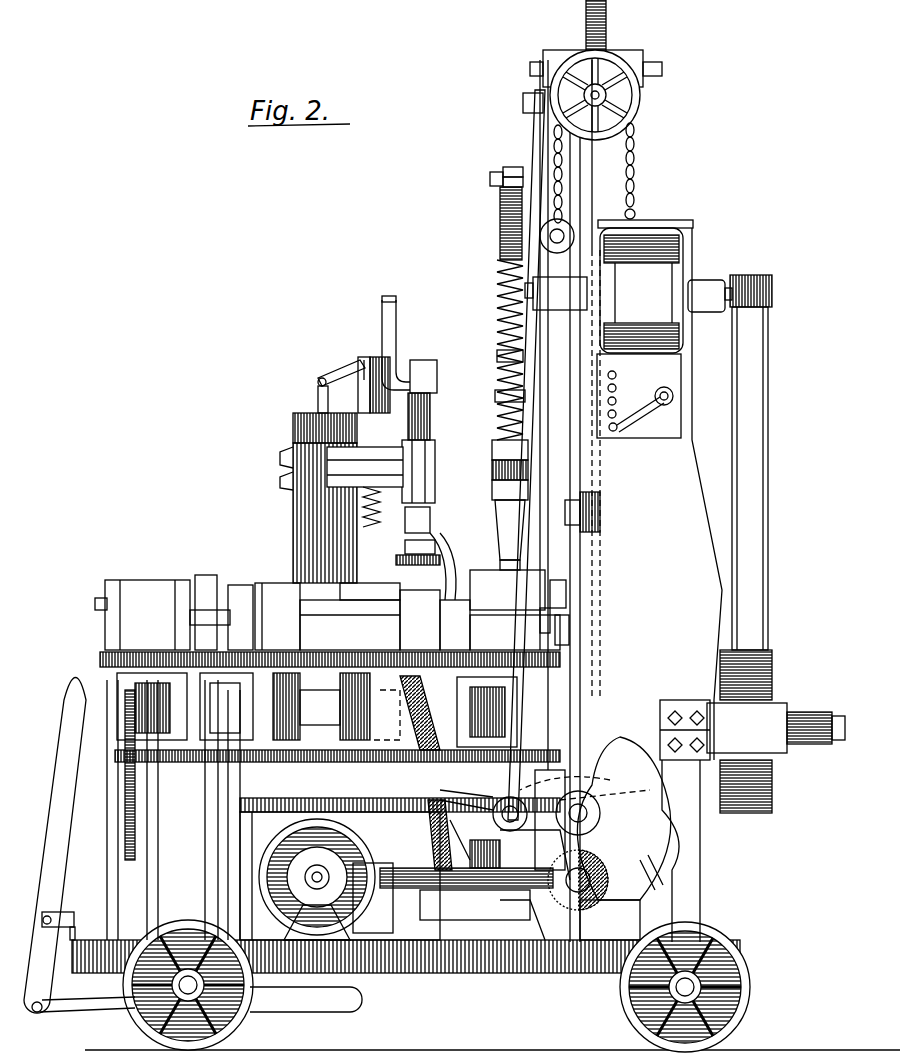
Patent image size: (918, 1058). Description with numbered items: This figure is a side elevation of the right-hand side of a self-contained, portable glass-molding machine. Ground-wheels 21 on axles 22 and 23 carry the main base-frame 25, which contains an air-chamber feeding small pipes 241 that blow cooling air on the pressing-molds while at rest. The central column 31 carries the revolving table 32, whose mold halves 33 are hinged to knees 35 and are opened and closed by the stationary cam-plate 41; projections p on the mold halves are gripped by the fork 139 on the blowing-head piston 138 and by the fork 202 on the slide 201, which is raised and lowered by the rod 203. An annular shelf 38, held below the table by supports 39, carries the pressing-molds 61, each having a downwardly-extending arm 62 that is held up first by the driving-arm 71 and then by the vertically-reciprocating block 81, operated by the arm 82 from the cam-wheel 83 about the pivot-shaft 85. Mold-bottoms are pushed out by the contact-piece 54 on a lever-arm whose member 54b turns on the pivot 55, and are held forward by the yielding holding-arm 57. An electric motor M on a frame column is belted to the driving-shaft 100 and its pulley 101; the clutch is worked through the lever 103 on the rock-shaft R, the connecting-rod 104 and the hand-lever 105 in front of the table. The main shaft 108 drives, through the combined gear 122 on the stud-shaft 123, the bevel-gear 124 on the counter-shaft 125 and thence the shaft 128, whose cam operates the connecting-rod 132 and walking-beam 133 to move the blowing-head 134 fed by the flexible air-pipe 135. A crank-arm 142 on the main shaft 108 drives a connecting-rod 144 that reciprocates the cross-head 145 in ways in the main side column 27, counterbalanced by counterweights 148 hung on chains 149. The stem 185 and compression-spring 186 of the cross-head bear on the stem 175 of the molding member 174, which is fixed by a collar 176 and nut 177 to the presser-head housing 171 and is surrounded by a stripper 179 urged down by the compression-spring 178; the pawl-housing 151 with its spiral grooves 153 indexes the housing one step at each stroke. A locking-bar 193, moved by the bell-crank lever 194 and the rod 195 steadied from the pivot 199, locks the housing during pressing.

The ground-wheels 21 is at (130, 1012).
The axle 22 is at (635, 1005).
The axle 23 is at (200, 990).
The main base-frame 25 is at (478, 976).
The main side column 27 is at (680, 493).
The central main standard or column 31 is at (217, 875).
The revolving table 32 is at (100, 658).
The mold half 33 is at (108, 582).
The knee 35 is at (186, 578).
The annular shelf 38 is at (190, 763).
The distance-blocks or supports 39 is at (103, 766).
The stationary cam-plate 41 is at (282, 580).
The contact-piece 54 is at (405, 687).
The lever-arm member 54b is at (466, 883).
The pivot 55 is at (507, 850).
The yielding holding-arm 57 is at (416, 700).
The pressing-mold 61 is at (118, 695).
The downwardly-extending arm 62 is at (125, 832).
The driving-arm 71 is at (444, 827).
The vertically-reciprocating block 81 is at (296, 506).
The arm 82 is at (508, 818).
The cam-wheel 83 is at (292, 900).
The pivot-shaft 85 is at (470, 792).
The driving-shaft 100 is at (828, 715).
The pulley 101 is at (762, 806).
The lever 103 is at (672, 872).
The connecting-rod 104 is at (356, 1012).
The hand-lever 105 is at (66, 698).
The main shaft 108 is at (598, 805).
The combined spur and bevel gear 122 is at (587, 905).
The stud-shaft 123 is at (592, 880).
The bevel-gear 124 is at (548, 905).
The counter-shaft 125 is at (490, 888).
The shaft 128 is at (322, 907).
The connecting-rod 132 is at (300, 397).
The walking-beam 133 is at (340, 372).
The blowing-head 134 is at (400, 550).
The flexible air-pipe 135 is at (398, 312).
The piston 138 is at (430, 421).
The fork 139 is at (447, 572).
The crank-arm 142 is at (622, 745).
The connecting-rod 144 is at (530, 682).
The cross-head 145 is at (545, 235).
The counterweights 148 is at (655, 220).
The chains or cords 149 is at (640, 136).
The pawl-housing 151 is at (608, 28).
The spiral grooves 153 is at (586, 28).
The presser-head housing 171 is at (492, 469).
The molding member 174 is at (520, 563).
The stem 175 is at (500, 356).
The collar 176 is at (492, 490).
The nut 177 is at (492, 455).
The compression-spring 178 is at (496, 396).
The stripper 179 is at (495, 513).
The stem 185 is at (515, 166).
The compression-spring 186 is at (496, 276).
The locking-bar 193 is at (598, 525).
The bell-crank lever 194 is at (600, 507).
The rod 195 is at (585, 614).
The pivot 199 is at (690, 818).
The slide 201 is at (570, 622).
The fork 202 is at (560, 594).
The rod 203 is at (555, 705).
The small pipes 241 is at (210, 832).
The electric motor M is at (688, 243).
The rock-shaft R is at (684, 851).
The projections p is at (95, 605).